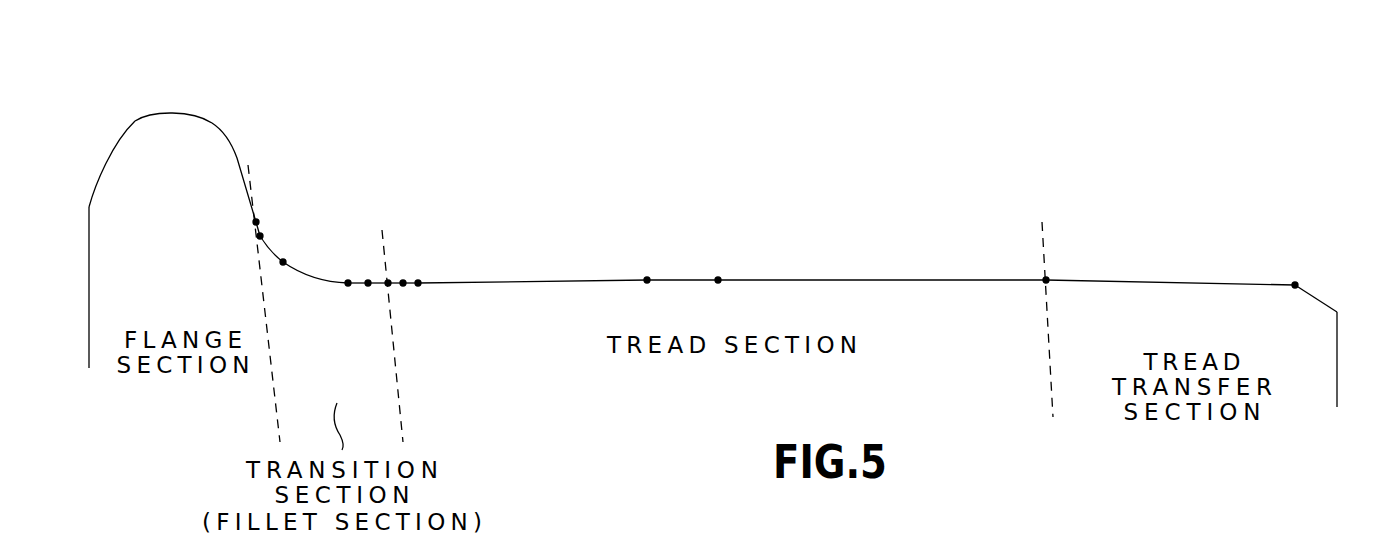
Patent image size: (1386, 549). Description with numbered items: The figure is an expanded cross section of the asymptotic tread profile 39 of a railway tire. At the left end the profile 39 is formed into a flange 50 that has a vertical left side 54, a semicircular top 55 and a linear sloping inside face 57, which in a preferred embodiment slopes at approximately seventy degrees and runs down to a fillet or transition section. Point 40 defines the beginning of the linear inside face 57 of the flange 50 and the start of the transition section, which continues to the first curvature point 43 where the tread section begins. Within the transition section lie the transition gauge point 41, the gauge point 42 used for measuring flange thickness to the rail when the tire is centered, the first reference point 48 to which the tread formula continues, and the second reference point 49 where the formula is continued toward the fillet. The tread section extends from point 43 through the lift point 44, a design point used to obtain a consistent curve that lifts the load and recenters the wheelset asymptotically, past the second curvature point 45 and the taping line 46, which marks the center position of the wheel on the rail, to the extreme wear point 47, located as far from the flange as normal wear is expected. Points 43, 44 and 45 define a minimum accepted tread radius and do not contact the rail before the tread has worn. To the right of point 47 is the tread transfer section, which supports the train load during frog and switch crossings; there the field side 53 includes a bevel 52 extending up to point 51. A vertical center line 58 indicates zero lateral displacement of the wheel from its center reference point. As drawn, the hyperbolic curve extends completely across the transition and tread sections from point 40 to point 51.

The asymptotic tread profile 39 is at (714, 228).
The beginning point of linear inside face 40 is at (256, 222).
The transition gauge point 41 is at (261, 236).
The gauge point 42 is at (284, 262).
The first curvature point 43 is at (388, 283).
The lift point 44 is at (403, 283).
The second curvature point 45 is at (418, 285).
The taping line 46 is at (718, 280).
The extreme wear point 47 is at (1046, 280).
The first reference point 48 is at (348, 285).
The second reference point 49 is at (368, 285).
The flange 50 is at (178, 112).
The bevel end point 51 is at (1295, 285).
The bevel 52 is at (1318, 300).
The field side 53 is at (1338, 362).
The vertical left side 54 is at (89, 300).
The semicircular top 55 is at (140, 145).
The linear sloping inside face 57 is at (232, 147).
The center line 58 is at (647, 280).